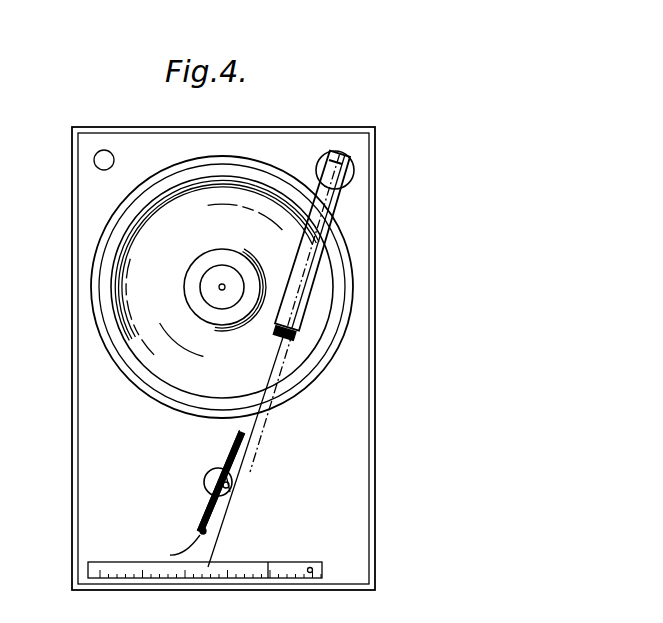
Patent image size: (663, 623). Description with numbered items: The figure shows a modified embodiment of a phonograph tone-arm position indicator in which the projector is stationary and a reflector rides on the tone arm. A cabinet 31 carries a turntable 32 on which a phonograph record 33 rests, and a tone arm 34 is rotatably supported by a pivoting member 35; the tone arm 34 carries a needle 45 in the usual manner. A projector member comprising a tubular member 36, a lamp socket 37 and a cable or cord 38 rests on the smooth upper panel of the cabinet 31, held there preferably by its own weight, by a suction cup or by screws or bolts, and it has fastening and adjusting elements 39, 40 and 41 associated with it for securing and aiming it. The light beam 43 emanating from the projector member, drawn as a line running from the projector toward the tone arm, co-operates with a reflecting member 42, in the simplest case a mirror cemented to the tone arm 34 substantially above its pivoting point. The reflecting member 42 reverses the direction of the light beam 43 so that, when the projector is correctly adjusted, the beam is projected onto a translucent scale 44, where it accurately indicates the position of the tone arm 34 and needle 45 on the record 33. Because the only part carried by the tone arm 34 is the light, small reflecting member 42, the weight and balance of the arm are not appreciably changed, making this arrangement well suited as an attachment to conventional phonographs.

The cabinet 31 is at (362, 290).
The turntable 32 is at (140, 393).
The phonograph record 33 is at (306, 352).
The tone arm 34 is at (306, 258).
The pivoting member 35 is at (352, 174).
The tubular member 36 is at (240, 433).
The lamp socket 37 is at (207, 530).
The cable or cord 38 is at (182, 537).
The fastening and adjusting element 39 is at (212, 471).
The fastening and adjusting element 40 is at (230, 482).
The fastening and adjusting element 41 is at (229, 491).
The reflecting member 42 is at (333, 170).
The axis line 43 is at (255, 436).
The translucent scale 44 is at (318, 575).
The needle 45 is at (278, 326).